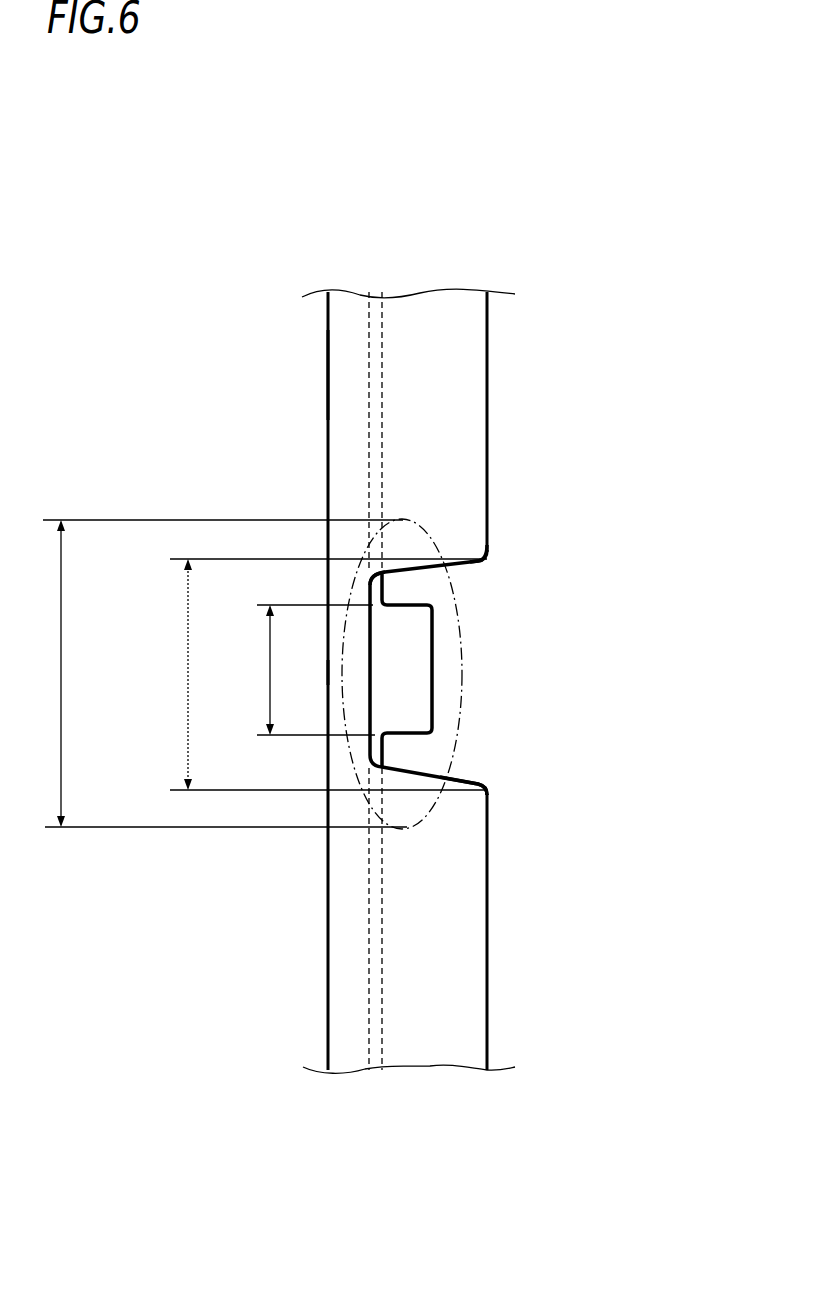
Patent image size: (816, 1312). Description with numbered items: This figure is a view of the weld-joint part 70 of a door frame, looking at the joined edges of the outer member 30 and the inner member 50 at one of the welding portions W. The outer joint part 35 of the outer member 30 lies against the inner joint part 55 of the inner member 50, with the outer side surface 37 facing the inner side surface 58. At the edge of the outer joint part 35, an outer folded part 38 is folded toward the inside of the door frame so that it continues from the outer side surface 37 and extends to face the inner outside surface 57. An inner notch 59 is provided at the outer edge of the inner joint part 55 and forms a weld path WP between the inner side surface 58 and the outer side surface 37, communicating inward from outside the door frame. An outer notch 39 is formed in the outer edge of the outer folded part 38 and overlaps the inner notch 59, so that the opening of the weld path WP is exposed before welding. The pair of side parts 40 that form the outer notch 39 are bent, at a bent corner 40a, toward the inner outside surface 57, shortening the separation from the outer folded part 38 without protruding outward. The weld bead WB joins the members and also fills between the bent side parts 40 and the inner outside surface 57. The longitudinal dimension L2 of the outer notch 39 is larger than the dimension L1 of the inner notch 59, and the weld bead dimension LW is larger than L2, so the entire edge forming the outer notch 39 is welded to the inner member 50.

The outer member 30 is at (316, 1003).
The outer joint part 35 is at (328, 370).
The outer side surface 37 is at (377, 1050).
The outer folded part 38 is at (447, 1055).
The outer notch 39 is at (453, 778).
The side parts 40 is at (466, 569).
The upper bent corner 40a is at (487, 560).
The inner member 50 is at (500, 720).
The inner joint part 55 is at (513, 1030).
The inner outside surface 57 is at (422, 747).
The inner side surface 58 is at (380, 295).
The inner notch 59 is at (408, 612).
The weld-joint part 70 is at (352, 568).
The dimension of the weld bead in the longitudinal direction LW is at (216, 673).
The dimension of the outer notch in the longitudinal direction L2 is at (316, 674).
The dimension of the inner notch in the longitudinal direction L1 is at (304, 670).
The welding portion W is at (318, 675).
The weld path WP is at (390, 695).
The weld bead WB is at (460, 670).